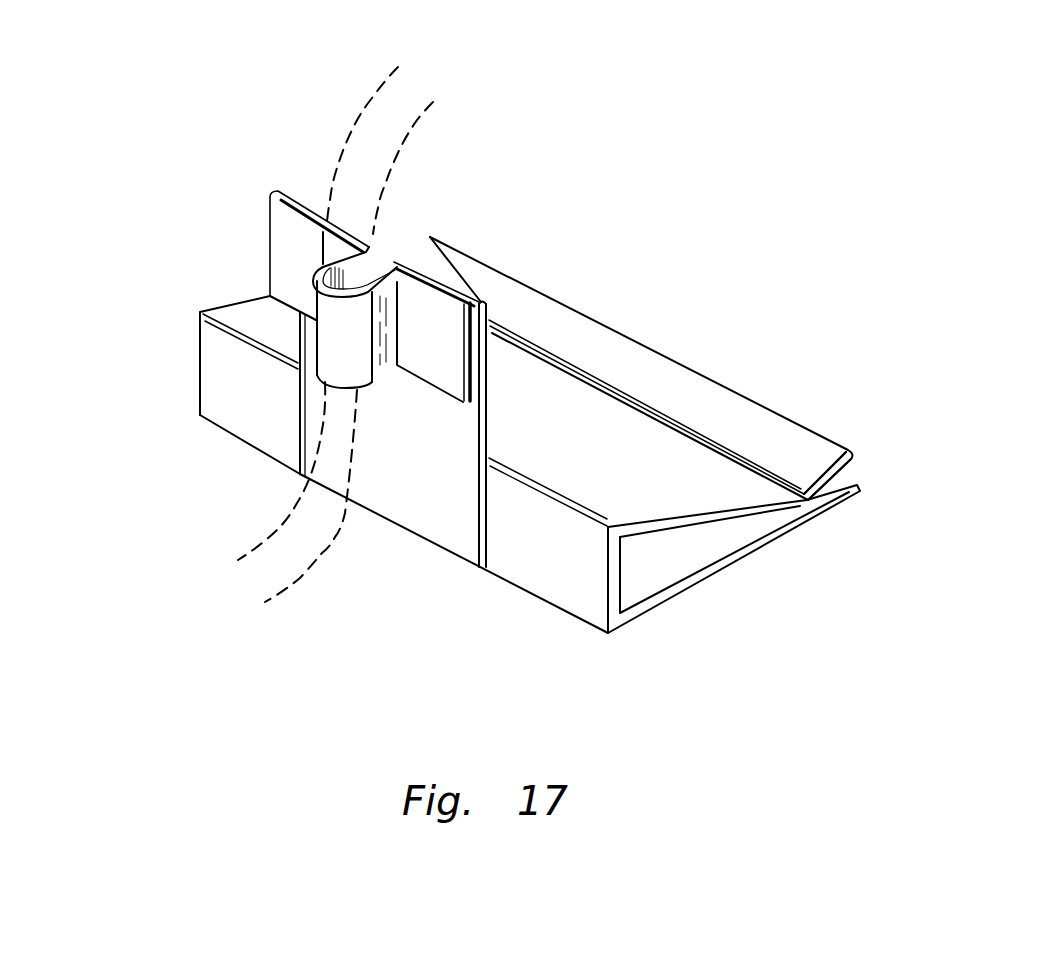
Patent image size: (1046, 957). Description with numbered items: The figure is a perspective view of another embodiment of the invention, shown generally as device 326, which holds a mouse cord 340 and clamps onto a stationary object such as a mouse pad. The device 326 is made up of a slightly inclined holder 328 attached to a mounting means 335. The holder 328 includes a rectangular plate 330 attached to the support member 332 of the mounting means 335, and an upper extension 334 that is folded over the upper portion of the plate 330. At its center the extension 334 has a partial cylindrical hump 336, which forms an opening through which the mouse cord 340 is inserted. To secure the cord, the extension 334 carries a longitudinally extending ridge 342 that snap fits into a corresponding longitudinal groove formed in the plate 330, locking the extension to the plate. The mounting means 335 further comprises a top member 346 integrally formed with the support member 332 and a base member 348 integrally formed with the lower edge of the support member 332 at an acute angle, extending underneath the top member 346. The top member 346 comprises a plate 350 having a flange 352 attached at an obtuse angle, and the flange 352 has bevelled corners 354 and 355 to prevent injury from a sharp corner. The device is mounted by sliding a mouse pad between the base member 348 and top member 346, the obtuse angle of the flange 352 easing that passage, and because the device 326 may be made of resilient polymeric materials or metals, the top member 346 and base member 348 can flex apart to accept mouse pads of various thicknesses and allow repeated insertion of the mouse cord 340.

The device 326 is at (605, 246).
The holder 328 is at (240, 186).
The rectangular plate 330 is at (440, 522).
The support member 332 is at (555, 571).
The upper extension 334 is at (277, 273).
The mounting means 335 is at (203, 312).
The partial cylindrical hump 336 is at (320, 257).
The mouse cord 340 is at (352, 135).
The ridge 342 is at (470, 257).
The top member 346 is at (642, 486).
The base member 348 is at (720, 566).
The plate 350 is at (588, 430).
The flange 352 is at (745, 415).
The bevelled corner 354 is at (850, 456).
The bevelled corner 355 is at (431, 236).